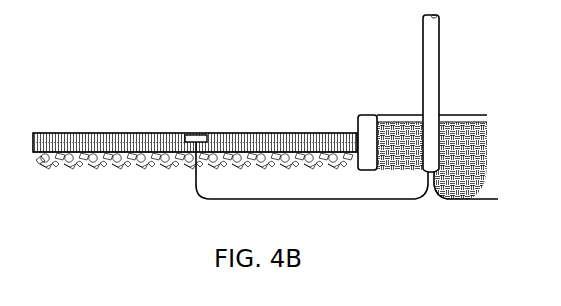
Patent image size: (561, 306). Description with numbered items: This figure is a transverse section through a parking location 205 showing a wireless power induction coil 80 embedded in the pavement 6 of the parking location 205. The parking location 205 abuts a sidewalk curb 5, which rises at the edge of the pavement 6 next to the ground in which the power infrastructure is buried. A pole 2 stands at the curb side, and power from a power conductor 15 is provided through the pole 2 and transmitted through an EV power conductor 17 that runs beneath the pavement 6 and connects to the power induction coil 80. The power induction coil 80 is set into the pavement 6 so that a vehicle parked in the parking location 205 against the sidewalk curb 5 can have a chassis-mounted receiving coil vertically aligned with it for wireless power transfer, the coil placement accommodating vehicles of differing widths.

The pole 2 is at (447, 68).
The sidewalk curb 5 is at (358, 118).
The pavement 6 is at (195, 121).
The parking location 205 is at (101, 133).
The power conductor 15 is at (484, 199).
The EV power conductor 17 is at (343, 199).
The power induction coil 80 is at (194, 135).